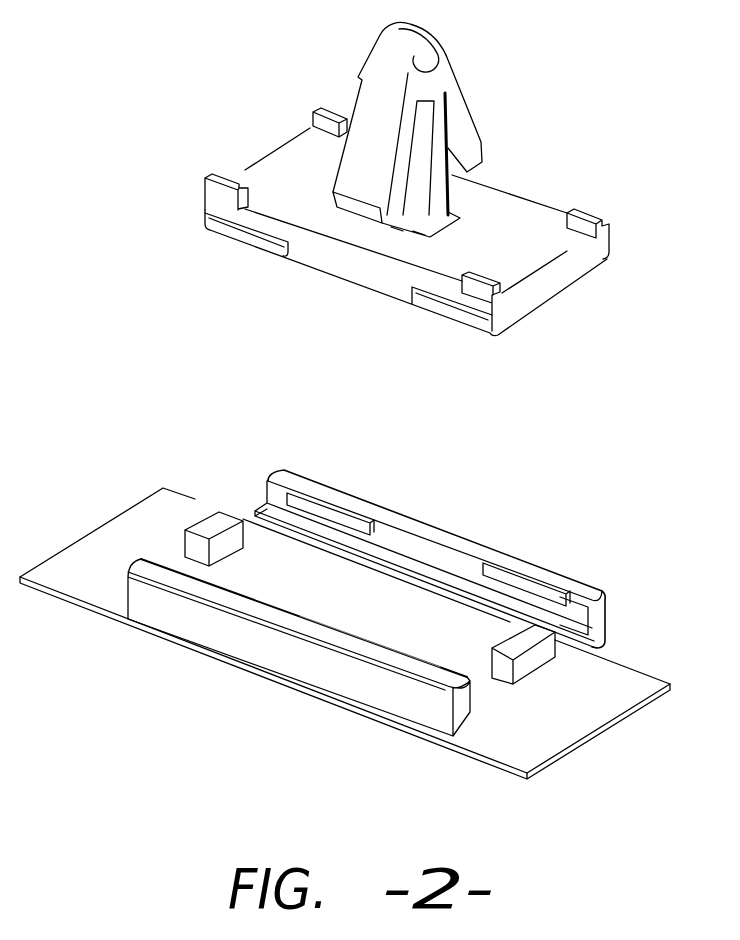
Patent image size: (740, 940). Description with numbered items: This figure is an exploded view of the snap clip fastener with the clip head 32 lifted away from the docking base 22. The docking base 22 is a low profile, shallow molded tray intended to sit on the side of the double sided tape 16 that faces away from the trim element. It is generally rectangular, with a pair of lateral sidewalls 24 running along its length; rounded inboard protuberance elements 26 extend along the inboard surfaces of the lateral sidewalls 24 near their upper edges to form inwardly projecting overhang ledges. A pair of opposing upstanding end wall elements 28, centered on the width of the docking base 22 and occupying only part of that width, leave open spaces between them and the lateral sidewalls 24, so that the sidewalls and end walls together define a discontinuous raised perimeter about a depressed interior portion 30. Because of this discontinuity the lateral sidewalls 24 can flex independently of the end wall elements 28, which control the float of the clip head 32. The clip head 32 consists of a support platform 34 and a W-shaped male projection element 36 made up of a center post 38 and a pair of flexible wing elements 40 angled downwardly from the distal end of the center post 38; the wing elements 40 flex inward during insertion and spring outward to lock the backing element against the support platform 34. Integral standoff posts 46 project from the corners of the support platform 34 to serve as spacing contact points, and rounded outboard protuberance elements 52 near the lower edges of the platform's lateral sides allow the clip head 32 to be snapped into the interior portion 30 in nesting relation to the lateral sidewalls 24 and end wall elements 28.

The double sided tape 16 is at (567, 720).
The docking base 22 is at (345, 610).
The lateral sidewalls 24 is at (415, 525).
The inboard protuberance elements 26 is at (303, 502).
The end wall elements 28 is at (213, 522).
The depressed interior portion 30 is at (392, 628).
The clip head 32 is at (400, 197).
The support platform 34 is at (501, 212).
The male projection element 36 is at (464, 96).
The center post 38 is at (440, 195).
The flexible wing elements 40 is at (481, 128).
The standoff posts 46 is at (220, 178).
The outboard protuberance elements 52 is at (217, 222).